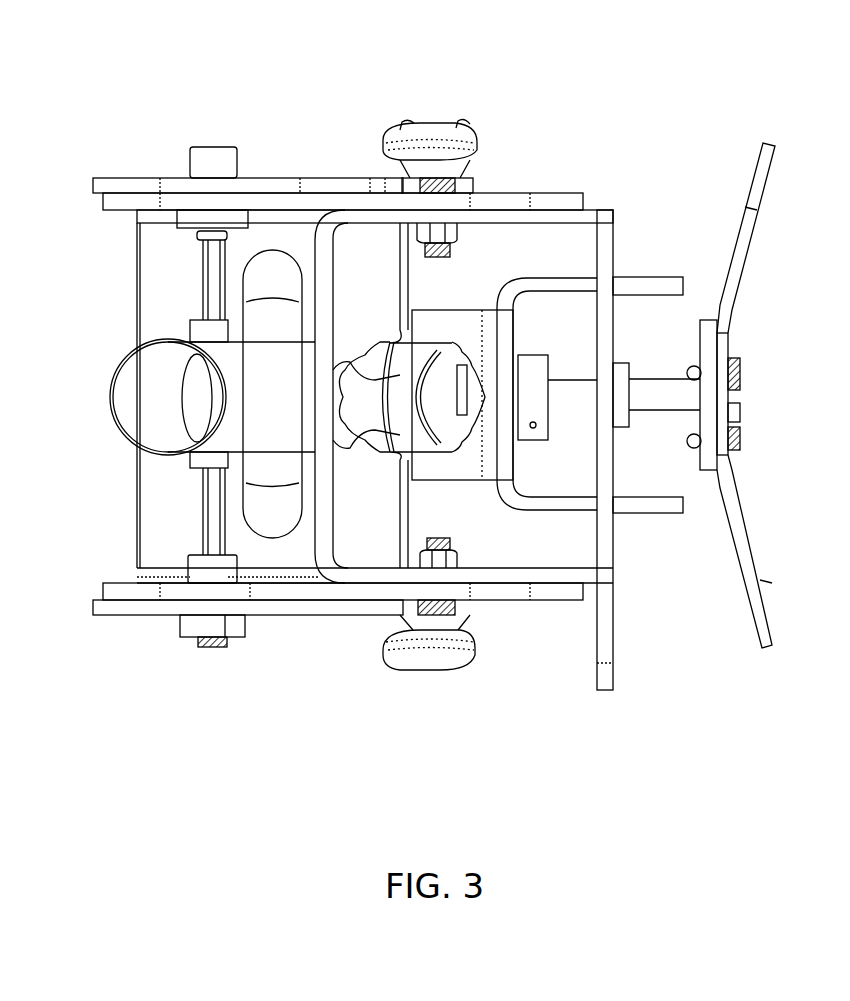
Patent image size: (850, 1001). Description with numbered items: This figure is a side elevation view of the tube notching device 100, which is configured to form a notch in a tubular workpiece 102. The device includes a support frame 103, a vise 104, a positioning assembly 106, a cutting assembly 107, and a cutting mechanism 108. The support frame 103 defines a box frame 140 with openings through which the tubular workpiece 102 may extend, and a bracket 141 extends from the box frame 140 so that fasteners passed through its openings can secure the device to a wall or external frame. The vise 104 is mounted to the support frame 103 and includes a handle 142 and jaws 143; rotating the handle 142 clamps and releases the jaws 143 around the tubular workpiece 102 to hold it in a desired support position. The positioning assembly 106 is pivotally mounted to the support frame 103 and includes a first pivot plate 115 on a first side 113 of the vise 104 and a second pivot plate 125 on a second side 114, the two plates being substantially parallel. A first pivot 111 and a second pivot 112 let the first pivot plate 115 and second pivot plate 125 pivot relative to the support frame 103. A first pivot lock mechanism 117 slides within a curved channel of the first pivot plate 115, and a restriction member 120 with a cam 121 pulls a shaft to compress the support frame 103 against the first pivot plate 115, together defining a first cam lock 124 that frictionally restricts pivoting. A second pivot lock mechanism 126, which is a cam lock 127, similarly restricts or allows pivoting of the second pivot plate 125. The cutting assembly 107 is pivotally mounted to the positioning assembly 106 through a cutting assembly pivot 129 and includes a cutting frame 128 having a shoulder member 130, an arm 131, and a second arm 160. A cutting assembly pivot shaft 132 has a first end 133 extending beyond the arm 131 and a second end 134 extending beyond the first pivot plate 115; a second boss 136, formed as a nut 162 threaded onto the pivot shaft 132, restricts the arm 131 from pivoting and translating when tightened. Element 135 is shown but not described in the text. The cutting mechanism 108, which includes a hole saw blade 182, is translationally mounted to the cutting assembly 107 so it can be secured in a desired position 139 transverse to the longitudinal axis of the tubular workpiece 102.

The tube notching device 100 is at (62, 100).
The tubular workpiece 102 is at (248, 410).
The support frame 103 is at (636, 205).
The vise 104 is at (808, 236).
The positioning assembly 106 is at (512, 184).
The cutting assembly 107 is at (265, 162).
The cutting mechanism 108 is at (268, 298).
The first pivot 111 is at (482, 560).
The second pivot 112 is at (434, 262).
The first side 113 is at (325, 712).
The second side 114 is at (350, 68).
The first pivot plate 115 is at (515, 601).
The first pivot lock mechanism 117 is at (420, 690).
The restriction member 120 is at (450, 660).
The cam 121 is at (370, 660).
The first cam lock 124 is at (438, 710).
The second pivot plate 125 is at (556, 198).
The second pivot lock mechanism 126 is at (408, 115).
The cam lock 127 is at (462, 118).
The cutting frame 128 is at (90, 186).
The cutting assembly pivot 129 is at (180, 640).
The shoulder member 130 is at (148, 262).
The arm 131 is at (96, 616).
The cutting assembly pivot shaft 132 is at (216, 646).
The first end 133 is at (195, 556).
The second end 134 is at (200, 650).
The clamp nut face 135 is at (190, 571).
The second boss 136 is at (245, 627).
The desired position 139 is at (118, 452).
The box frame 140 is at (626, 545).
The bracket 141 is at (612, 620).
The handle 142 is at (742, 545).
The jaws 143 is at (358, 316).
The second arm 160 is at (140, 186).
The nut 162 is at (185, 633).
The hole saw blade 182 is at (168, 342).